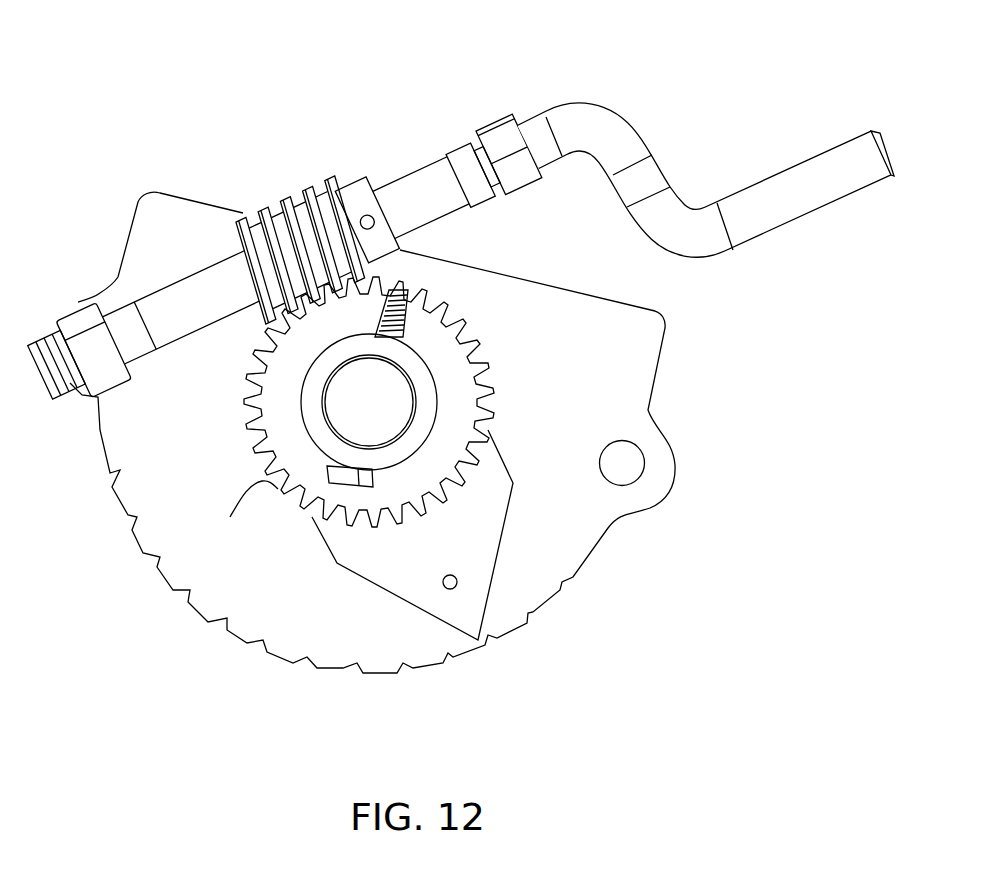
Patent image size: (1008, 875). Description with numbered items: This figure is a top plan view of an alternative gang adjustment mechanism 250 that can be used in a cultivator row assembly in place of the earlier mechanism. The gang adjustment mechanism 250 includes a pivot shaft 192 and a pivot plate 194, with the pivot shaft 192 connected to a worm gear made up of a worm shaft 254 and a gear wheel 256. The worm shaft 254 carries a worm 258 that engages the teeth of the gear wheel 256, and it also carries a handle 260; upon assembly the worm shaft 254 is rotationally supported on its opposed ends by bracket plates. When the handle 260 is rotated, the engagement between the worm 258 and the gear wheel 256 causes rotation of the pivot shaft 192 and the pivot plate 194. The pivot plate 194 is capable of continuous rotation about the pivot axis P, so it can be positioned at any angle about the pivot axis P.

The gang adjustment mechanism 250 is at (201, 52).
The worm shaft 254 is at (432, 188).
The worm 258 is at (307, 187).
The handle 260 is at (805, 172).
The pivot shaft 192 is at (372, 402).
The pivot plate 194 is at (628, 407).
The gear wheel 256 is at (250, 492).
The pivot axis P is at (368, 402).